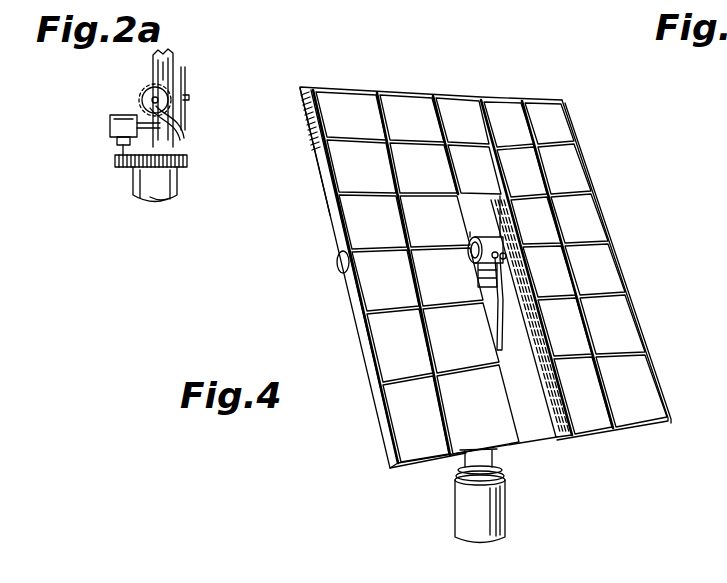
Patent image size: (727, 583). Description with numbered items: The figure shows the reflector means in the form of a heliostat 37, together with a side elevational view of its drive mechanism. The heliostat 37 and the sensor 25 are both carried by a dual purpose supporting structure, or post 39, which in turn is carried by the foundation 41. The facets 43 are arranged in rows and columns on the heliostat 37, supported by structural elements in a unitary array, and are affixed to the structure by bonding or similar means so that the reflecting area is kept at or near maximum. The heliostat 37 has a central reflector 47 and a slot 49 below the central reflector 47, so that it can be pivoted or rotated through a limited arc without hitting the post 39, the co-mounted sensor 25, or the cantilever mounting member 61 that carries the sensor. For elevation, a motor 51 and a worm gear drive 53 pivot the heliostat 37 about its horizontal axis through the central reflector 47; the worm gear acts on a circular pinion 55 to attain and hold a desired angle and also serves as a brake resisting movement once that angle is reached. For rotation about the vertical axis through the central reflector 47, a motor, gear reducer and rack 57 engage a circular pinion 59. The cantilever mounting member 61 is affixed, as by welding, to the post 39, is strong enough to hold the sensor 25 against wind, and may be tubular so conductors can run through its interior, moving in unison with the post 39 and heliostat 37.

In FIG. 2a, the heliostat 37 is at (165, 58).
In FIG. 4, the heliostat 37 is at (306, 303).
In FIG. 2a, the circular pinion 55 is at (143, 100).
In FIG. 2a, the motor 51 is at (117, 125).
In FIG. 2a, the worm gear drive 53 is at (182, 133).
In FIG. 2a, the motor, gear reducer and rack 57 is at (117, 163).
In FIG. 2a, the circular pinion 59 is at (183, 164).
In FIG. 4, the facets 43 is at (416, 412).
In FIG. 4, the slot 49 is at (545, 437).
In FIG. 4, the central reflector 47 is at (490, 242).
In FIG. 4, the sensor 25 is at (507, 253).
In FIG. 4, the cantilever mounting member 61 is at (503, 280).
In FIG. 4, the post 39 is at (503, 460).
In FIG. 4, the foundation 41 is at (468, 497).